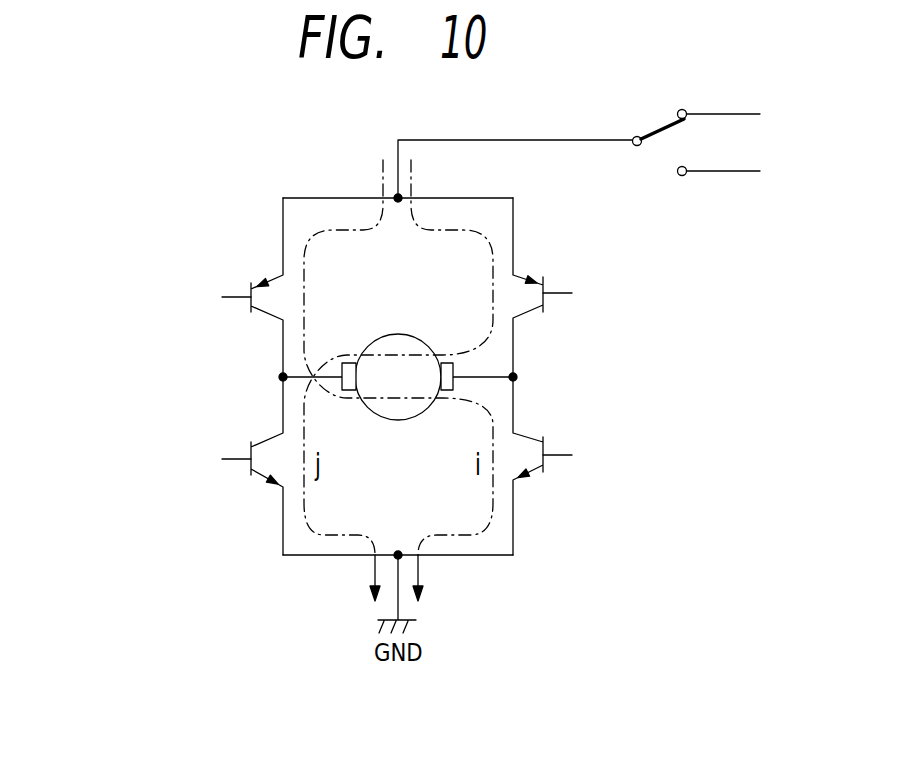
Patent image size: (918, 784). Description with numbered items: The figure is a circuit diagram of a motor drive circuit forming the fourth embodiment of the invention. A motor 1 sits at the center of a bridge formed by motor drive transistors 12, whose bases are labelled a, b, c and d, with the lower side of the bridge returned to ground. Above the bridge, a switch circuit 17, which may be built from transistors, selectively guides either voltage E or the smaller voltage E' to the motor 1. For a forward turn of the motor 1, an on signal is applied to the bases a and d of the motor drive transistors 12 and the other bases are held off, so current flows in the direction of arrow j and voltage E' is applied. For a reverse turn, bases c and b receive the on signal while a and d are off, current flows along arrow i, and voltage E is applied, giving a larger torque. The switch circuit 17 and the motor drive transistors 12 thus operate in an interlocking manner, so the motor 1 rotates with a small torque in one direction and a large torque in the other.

The motor 1 is at (405, 340).
The motor drive transistors 12 is at (270, 319).
The switch circuit 17 is at (662, 138).